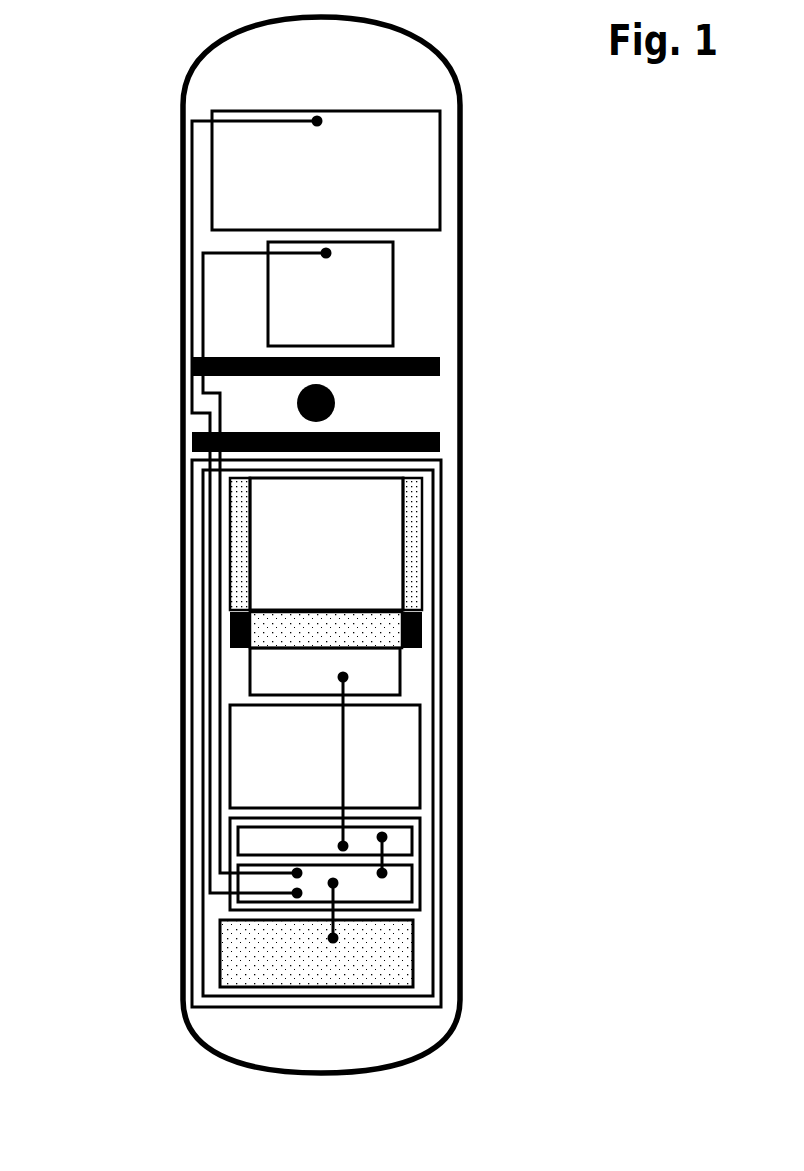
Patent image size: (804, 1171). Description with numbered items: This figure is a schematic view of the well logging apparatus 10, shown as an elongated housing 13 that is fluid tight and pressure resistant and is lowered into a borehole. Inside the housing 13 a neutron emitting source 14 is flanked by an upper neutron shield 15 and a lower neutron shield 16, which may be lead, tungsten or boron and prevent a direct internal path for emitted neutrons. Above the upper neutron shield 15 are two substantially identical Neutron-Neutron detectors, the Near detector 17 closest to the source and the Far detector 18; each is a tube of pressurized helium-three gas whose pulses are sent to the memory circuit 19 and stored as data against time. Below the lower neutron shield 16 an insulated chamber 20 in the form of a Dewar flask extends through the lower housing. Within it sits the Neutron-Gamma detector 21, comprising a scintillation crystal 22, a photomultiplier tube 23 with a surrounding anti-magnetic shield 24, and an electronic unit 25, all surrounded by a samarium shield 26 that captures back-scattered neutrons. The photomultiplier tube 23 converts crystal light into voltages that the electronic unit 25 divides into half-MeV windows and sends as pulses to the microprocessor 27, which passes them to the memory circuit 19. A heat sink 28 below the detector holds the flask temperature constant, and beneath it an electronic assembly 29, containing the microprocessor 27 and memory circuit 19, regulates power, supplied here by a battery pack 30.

The well logging apparatus 10 is at (172, 16).
The elongated housing 13 is at (442, 111).
The neutron emitting source 14 is at (335, 403).
The upper neutron shield 15 is at (440, 367).
The lower neutron shield 16 is at (440, 443).
The Near detector 17 is at (372, 300).
The Far detector 18 is at (420, 178).
The memory circuit 19 is at (382, 873).
The insulated chamber 20 is at (441, 472).
The Neutron-Gamma detector 21 is at (433, 509).
The scintillation crystal 22 is at (362, 582).
The photomultiplier tube 23 is at (372, 640).
The anti-magnetic shield 24 is at (422, 621).
The electronic unit 25 is at (382, 677).
The samarium shield 26 is at (412, 547).
The microprocessor 27 is at (382, 837).
The heat sink 28 is at (400, 761).
The electronic assembly 29 is at (412, 902).
The battery pack 30 is at (383, 958).